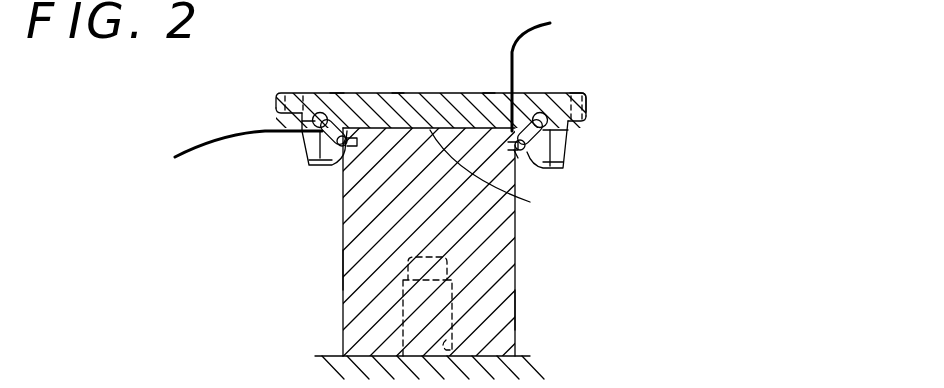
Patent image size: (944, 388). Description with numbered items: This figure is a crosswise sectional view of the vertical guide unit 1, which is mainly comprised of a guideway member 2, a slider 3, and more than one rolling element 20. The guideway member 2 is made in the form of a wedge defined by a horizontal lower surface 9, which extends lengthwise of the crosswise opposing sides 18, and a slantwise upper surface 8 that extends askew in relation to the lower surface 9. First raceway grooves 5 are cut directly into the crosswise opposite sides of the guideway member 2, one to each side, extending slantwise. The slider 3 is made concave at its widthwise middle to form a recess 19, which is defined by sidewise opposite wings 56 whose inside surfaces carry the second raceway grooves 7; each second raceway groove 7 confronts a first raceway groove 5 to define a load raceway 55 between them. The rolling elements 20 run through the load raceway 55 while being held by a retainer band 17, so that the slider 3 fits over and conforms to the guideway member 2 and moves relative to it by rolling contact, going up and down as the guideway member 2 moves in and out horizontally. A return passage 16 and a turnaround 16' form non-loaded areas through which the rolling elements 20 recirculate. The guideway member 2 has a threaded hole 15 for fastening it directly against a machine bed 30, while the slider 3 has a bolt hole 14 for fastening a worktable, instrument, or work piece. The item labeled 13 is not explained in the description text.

The vertical guide unit 1 is at (603, 94).
The guideway member 2 is at (483, 255).
The slider 3 is at (440, 93).
The first raceway groove 5 is at (337, 147).
The second raceway groove 7 is at (337, 93).
The slantwise upper surface 8 is at (398, 93).
The lower surface 9 is at (343, 356).
The top surface 13 is at (489, 93).
The bolt hole 14 is at (276, 95).
The threaded hole 15 is at (452, 346).
The return passage 16 is at (403, 87).
The turnaround 16' is at (361, 90).
The retainer band 17 is at (518, 158).
The crosswise opposing sides 18 is at (340, 265).
The recess 19 is at (530, 202).
The rolling element 20 is at (307, 152).
The machine bed 30 is at (500, 372).
The load raceway 55 is at (360, 93).
The wings 56 is at (328, 138).